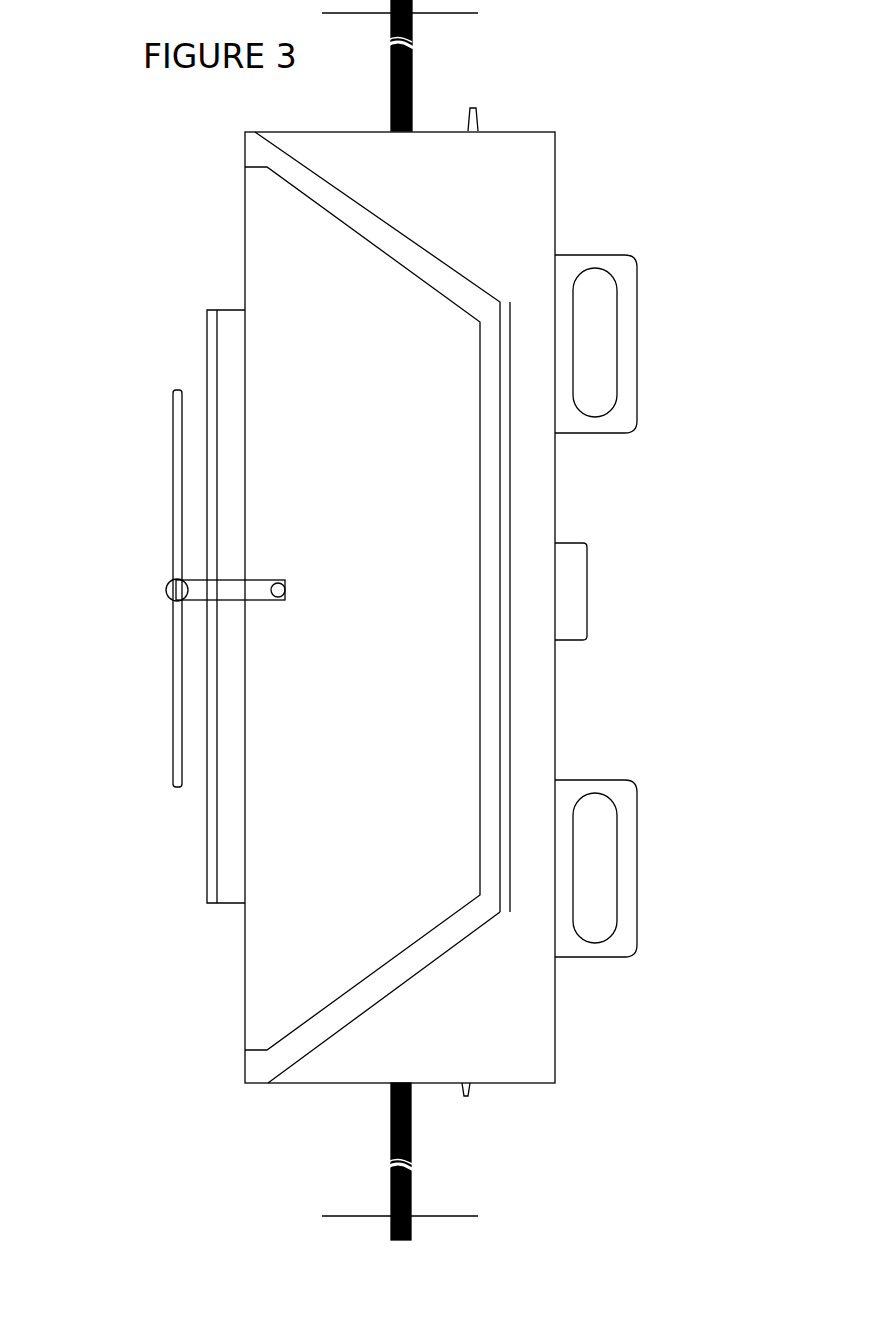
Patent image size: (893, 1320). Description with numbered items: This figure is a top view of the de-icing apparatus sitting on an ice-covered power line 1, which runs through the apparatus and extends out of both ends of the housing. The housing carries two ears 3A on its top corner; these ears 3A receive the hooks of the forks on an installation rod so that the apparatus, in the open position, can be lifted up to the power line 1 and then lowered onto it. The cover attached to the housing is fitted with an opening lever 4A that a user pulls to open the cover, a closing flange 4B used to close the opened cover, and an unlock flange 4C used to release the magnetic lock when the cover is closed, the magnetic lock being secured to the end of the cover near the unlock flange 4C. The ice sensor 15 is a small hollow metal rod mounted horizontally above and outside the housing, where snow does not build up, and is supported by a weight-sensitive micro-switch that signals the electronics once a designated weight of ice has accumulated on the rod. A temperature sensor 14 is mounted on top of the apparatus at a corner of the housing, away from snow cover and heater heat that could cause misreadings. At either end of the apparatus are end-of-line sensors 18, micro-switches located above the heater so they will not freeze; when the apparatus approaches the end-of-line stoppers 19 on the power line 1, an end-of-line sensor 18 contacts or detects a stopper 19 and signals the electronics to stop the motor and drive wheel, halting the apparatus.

The power line 1 is at (403, 1235).
The ears 3A is at (647, 365).
The opening lever 4A is at (505, 912).
The closing flange 4B is at (207, 327).
The unlock flange 4C is at (585, 593).
The temperature sensor 14 is at (173, 775).
The ice sensor 15 is at (290, 597).
The end-of-line sensors 18 is at (478, 125).
The end-of-line stoppers 19 is at (425, 20).